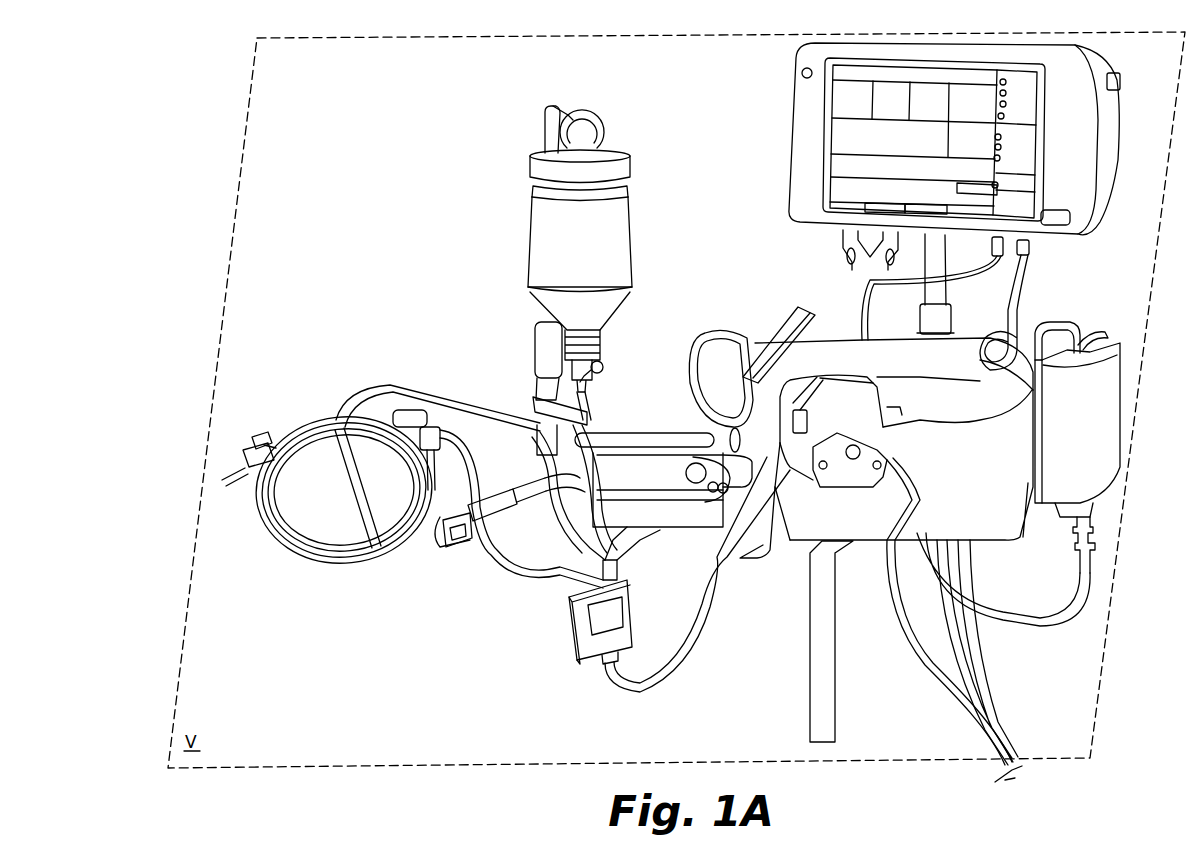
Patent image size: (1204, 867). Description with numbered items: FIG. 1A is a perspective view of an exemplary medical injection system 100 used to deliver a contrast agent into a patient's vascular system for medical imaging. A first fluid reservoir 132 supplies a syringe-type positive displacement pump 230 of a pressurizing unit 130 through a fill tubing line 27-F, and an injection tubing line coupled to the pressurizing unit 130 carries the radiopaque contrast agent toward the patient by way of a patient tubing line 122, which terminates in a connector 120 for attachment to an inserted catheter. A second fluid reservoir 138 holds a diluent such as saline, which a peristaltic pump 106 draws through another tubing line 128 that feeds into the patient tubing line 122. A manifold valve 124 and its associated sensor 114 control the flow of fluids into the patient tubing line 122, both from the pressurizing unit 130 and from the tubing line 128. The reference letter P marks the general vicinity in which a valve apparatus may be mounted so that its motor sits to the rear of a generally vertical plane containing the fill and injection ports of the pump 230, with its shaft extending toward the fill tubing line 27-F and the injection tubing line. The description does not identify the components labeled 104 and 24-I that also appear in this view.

The medical injection system 100 is at (298, 148).
The display monitor 104 is at (954, 206).
The peristaltic pump 106 is at (862, 383).
The sensor 114 is at (445, 543).
The connector 120 is at (232, 445).
The patient tubing line 122 is at (470, 427).
The manifold valve 124 is at (502, 510).
The tubing line 128 is at (690, 672).
The pressurizing unit 130 is at (625, 447).
The first fluid reservoir 132 is at (540, 242).
The second fluid reservoir 138 is at (1120, 423).
The pump 230 is at (660, 484).
The fill tubing line 27-F is at (598, 395).
The sensor module 24-I is at (547, 480).
The reference letter P is at (520, 390).